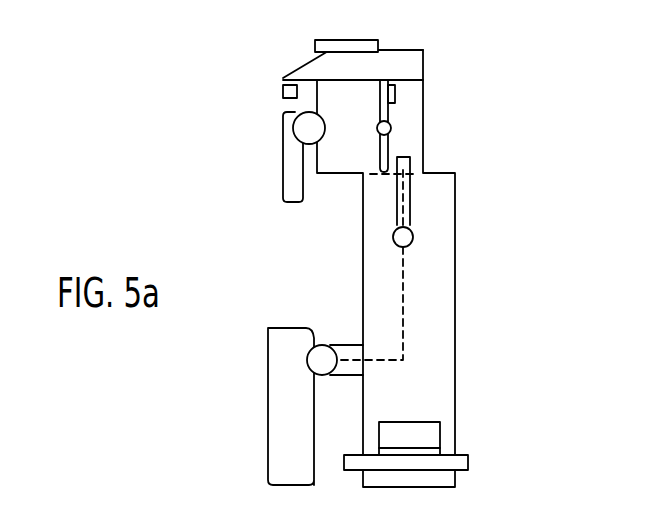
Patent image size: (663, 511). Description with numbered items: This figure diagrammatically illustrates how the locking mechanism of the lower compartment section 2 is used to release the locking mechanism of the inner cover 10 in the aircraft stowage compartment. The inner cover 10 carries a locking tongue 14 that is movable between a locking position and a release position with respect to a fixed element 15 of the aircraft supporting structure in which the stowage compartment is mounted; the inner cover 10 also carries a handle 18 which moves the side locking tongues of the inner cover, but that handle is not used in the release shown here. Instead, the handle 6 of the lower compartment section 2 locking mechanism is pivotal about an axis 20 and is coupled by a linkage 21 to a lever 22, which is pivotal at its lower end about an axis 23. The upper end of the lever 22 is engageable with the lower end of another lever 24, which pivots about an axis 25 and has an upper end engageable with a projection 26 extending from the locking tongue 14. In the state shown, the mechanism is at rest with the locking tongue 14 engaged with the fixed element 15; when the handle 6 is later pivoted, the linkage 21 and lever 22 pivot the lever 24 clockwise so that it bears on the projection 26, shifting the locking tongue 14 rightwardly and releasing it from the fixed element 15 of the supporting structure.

The lower compartment section 2 is at (453, 383).
The handle 6 is at (272, 395).
The inner cover 10 is at (333, 40).
The locking tongue 14 is at (413, 50).
The element of the fixed supporting structure 15 is at (283, 97).
The handle 18 is at (288, 170).
The axis 20 is at (321, 345).
The linkage 21 is at (403, 313).
The lever 22 is at (410, 203).
The axis 23 is at (413, 240).
The lever 24 is at (390, 145).
The axis 25 is at (379, 131).
The projection 26 is at (395, 95).